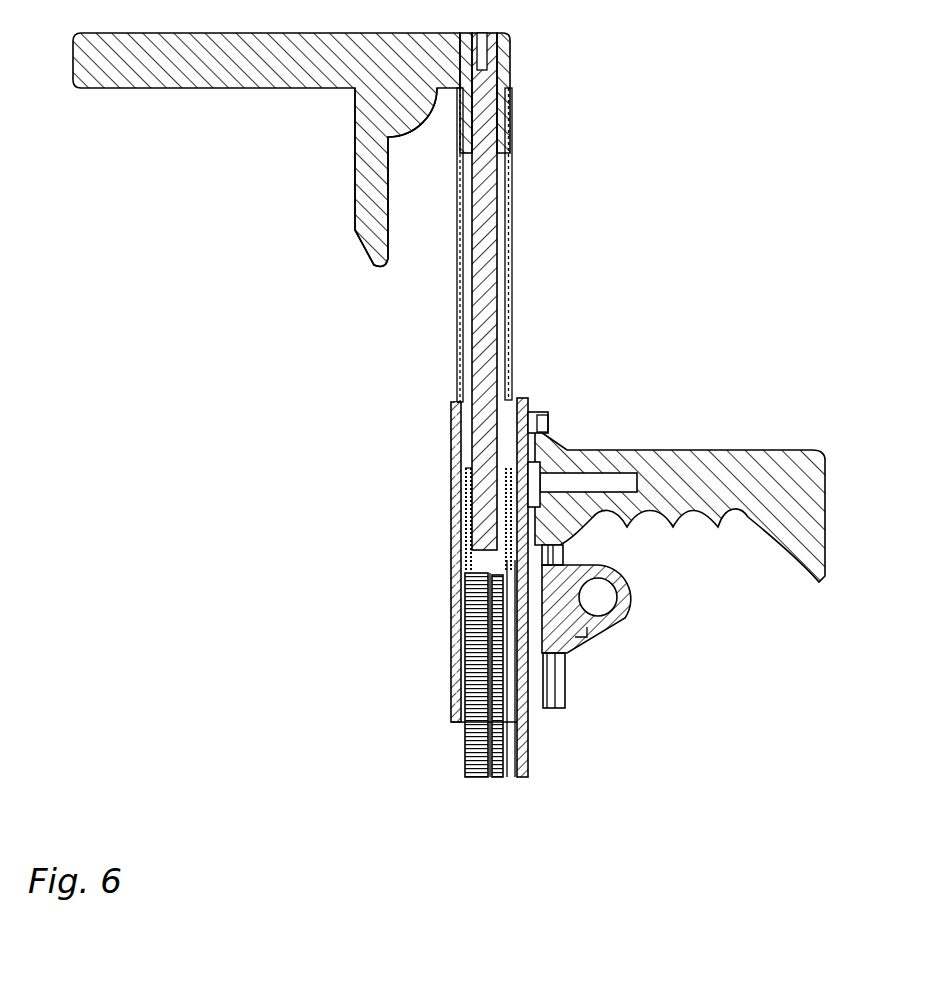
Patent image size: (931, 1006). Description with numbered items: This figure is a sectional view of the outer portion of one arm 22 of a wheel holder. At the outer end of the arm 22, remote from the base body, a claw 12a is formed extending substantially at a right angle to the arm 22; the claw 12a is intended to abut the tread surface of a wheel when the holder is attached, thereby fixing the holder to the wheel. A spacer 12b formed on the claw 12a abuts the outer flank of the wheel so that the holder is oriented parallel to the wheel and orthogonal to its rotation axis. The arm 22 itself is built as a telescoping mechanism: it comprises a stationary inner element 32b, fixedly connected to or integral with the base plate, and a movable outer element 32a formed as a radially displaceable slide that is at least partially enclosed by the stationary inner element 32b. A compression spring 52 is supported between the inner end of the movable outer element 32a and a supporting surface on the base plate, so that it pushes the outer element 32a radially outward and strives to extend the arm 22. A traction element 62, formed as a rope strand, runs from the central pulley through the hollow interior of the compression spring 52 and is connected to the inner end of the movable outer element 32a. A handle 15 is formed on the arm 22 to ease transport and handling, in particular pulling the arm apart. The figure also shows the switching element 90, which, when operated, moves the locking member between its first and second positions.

The claw 12a is at (151, 172).
The spacer 12b is at (339, 276).
The movable outer element 32a is at (534, 147).
The arm 22 is at (697, 157).
The stationary inner element 32b is at (423, 582).
The compression spring 52 is at (477, 738).
The traction element 62 is at (460, 741).
The handle 15 is at (799, 403).
The switching element 90 is at (627, 652).